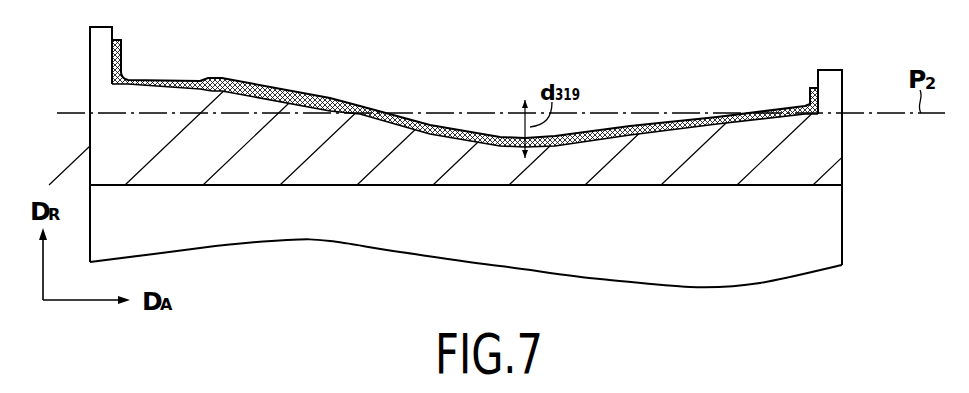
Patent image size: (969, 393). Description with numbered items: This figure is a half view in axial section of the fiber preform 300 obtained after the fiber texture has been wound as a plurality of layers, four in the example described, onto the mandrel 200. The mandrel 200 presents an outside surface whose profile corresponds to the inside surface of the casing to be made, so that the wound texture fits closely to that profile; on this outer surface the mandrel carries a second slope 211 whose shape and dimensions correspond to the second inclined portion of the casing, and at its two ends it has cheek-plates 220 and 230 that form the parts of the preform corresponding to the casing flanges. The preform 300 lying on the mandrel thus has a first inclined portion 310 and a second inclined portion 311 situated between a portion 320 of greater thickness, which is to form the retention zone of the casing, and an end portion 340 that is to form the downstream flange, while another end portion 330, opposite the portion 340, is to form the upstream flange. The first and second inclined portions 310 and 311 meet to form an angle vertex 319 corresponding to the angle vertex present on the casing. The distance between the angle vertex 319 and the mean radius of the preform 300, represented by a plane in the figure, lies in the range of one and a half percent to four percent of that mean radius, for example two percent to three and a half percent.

The mandrel 200 is at (493, 157).
The second slope 211 is at (350, 138).
The cheek-plate 220 is at (100, 63).
The cheek-plate 230 is at (840, 92).
The fiber preform 300 is at (465, 130).
The first inclined portion 310 is at (443, 125).
The second inclined portion 311 is at (653, 123).
The angle vertex 319 is at (498, 148).
The portion of greater thickness 320 is at (279, 88).
The end portion 330 is at (121, 50).
The end portion 340 is at (810, 97).